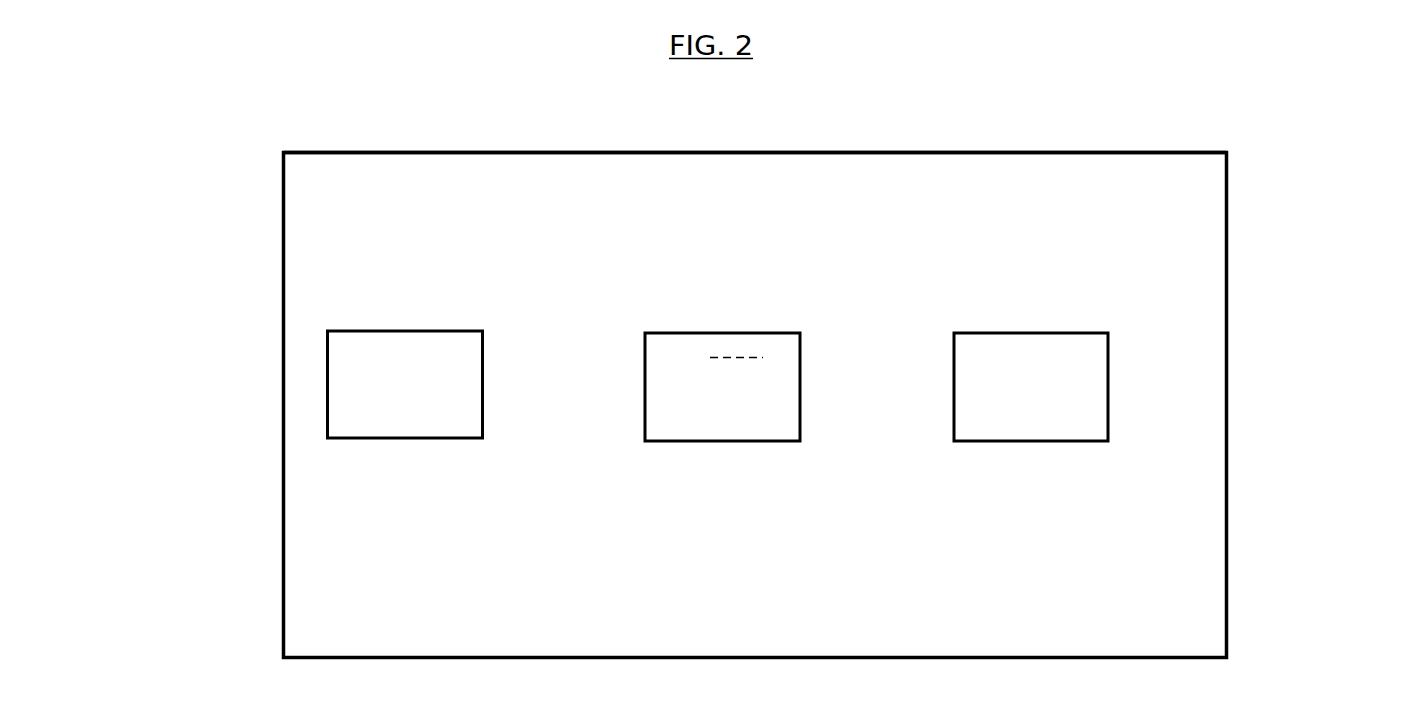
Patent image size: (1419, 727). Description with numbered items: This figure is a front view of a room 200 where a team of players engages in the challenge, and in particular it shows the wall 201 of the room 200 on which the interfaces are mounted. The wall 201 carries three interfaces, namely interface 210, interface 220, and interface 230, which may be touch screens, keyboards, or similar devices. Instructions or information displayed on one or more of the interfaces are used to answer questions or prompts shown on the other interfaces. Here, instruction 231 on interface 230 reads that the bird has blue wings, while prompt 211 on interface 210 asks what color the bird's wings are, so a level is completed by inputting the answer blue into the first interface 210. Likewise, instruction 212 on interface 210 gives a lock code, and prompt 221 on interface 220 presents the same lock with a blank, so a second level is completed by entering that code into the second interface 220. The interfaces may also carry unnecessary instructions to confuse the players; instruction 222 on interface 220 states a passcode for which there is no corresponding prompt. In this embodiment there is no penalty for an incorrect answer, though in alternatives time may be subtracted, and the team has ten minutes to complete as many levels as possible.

The room 200 is at (755, 391).
The wall 201 is at (971, 165).
The interface 210 is at (284, 315).
The prompt 211 is at (336, 360).
The instruction 212 is at (333, 413).
The interface 220 is at (1030, 381).
The prompt 221 is at (765, 345).
The instruction 222 is at (770, 411).
The interface 230 is at (1184, 426).
The instruction 231 is at (1010, 373).